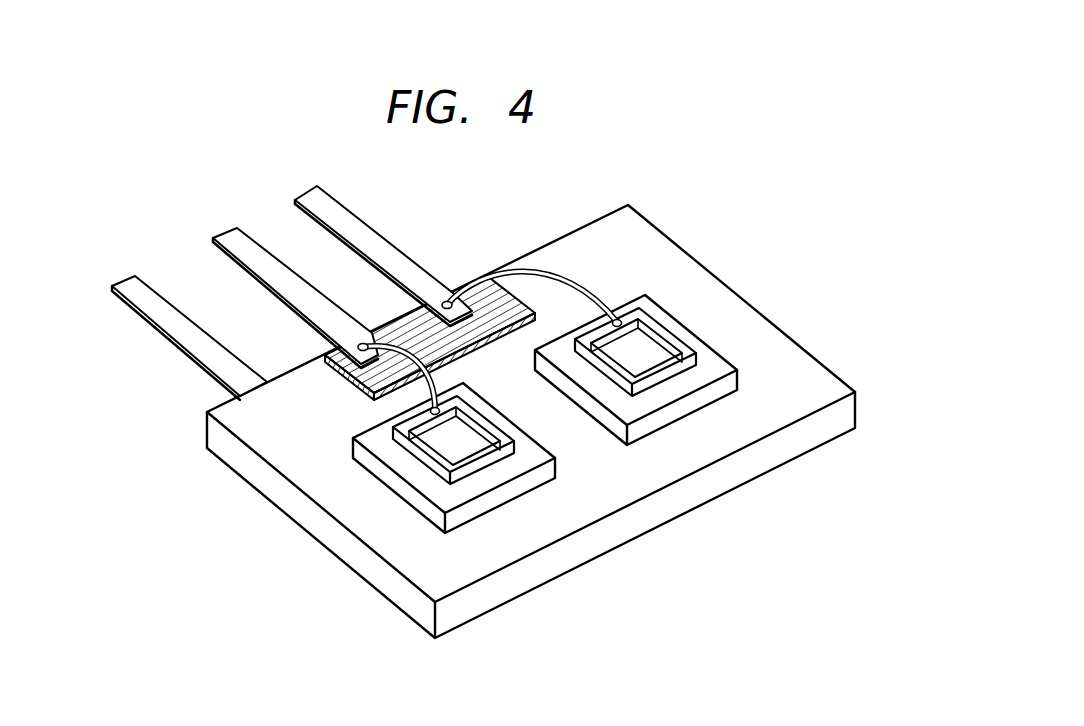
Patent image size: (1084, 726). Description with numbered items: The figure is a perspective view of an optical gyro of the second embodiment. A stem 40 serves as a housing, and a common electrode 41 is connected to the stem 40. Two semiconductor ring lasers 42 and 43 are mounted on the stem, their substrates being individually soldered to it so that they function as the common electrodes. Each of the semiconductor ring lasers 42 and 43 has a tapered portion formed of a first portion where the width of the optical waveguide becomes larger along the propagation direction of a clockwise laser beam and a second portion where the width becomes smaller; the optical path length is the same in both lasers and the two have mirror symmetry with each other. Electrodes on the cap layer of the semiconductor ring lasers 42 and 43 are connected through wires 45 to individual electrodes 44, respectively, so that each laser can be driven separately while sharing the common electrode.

The stem 40 is at (654, 231).
The common electrode 41 is at (122, 285).
The semiconductor ring laser 42 is at (408, 467).
The semiconductor ring laser 43 is at (653, 309).
The electrodes 44 is at (228, 232).
The wires 45 is at (557, 270).